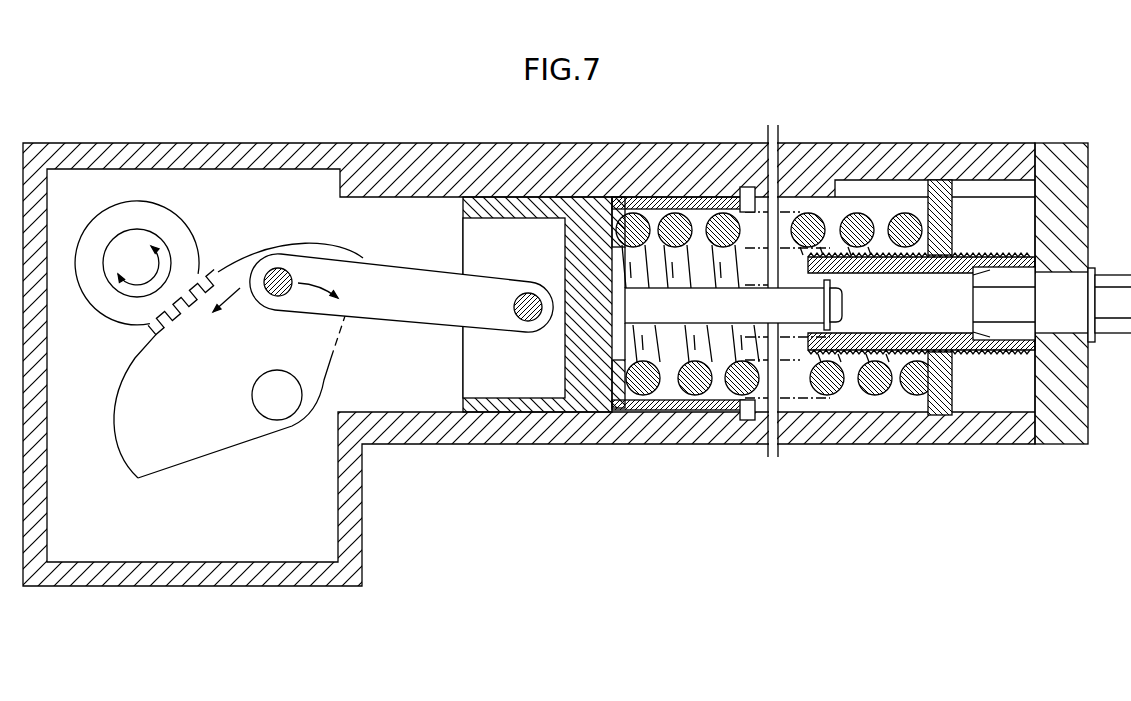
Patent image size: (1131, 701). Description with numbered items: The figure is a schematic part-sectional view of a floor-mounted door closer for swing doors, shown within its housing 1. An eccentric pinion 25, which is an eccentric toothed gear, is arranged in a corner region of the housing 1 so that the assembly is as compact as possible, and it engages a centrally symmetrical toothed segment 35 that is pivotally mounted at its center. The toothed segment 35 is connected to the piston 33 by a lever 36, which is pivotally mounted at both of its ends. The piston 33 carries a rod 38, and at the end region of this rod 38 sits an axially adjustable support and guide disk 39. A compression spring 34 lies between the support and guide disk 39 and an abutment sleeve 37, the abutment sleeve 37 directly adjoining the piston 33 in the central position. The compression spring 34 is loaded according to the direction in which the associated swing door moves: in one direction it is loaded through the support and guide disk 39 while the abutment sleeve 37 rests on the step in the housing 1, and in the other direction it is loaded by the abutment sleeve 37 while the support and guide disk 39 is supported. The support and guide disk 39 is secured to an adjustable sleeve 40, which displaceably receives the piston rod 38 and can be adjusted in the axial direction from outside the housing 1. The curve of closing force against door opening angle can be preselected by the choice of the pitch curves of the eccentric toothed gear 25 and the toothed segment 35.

The housing 1 is at (396, 147).
The eccentric pinion 25 is at (187, 238).
The piston 33 is at (597, 207).
The compression spring 34 is at (690, 210).
The toothed segment 35 is at (137, 380).
The lever 36 is at (400, 283).
The abutment sleeve 37 is at (643, 198).
The rod 38 is at (693, 312).
The support and guide disk 39 is at (940, 178).
The adjustable sleeve 40 is at (1002, 255).